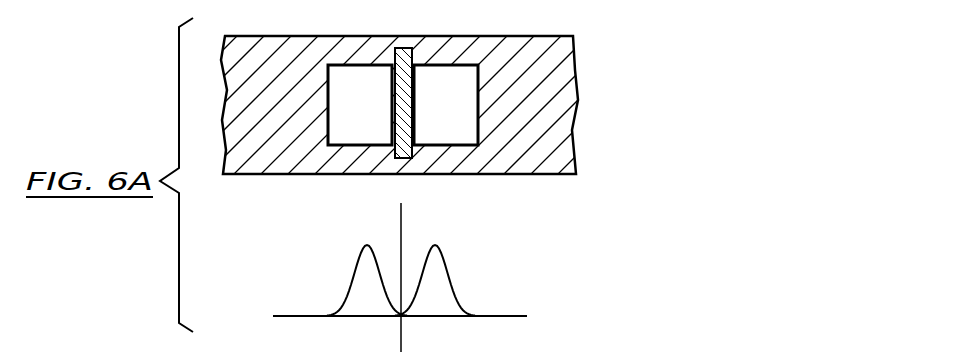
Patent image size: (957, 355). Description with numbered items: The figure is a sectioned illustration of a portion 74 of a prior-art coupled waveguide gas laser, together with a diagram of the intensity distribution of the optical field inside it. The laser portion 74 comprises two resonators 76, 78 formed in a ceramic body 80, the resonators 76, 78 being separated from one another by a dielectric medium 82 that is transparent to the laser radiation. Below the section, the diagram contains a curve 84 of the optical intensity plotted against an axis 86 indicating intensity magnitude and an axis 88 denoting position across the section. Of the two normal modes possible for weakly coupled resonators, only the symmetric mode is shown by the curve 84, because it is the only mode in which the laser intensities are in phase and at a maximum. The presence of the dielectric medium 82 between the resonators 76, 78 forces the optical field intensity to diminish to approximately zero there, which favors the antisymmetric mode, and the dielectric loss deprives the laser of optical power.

The portion of a coupled waveguide gas laser 74 is at (597, 52).
The resonator 76 is at (372, 116).
The resonator 78 is at (456, 116).
The ceramic body 80 is at (573, 118).
The dielectric medium 82 is at (412, 50).
The curve of the optical intensity 84 is at (448, 265).
The axis indicating intensity magnitude 86 is at (402, 220).
The axis denoting position 88 is at (515, 316).